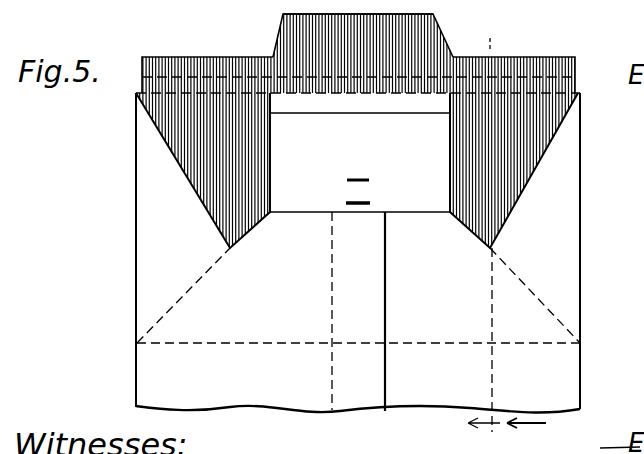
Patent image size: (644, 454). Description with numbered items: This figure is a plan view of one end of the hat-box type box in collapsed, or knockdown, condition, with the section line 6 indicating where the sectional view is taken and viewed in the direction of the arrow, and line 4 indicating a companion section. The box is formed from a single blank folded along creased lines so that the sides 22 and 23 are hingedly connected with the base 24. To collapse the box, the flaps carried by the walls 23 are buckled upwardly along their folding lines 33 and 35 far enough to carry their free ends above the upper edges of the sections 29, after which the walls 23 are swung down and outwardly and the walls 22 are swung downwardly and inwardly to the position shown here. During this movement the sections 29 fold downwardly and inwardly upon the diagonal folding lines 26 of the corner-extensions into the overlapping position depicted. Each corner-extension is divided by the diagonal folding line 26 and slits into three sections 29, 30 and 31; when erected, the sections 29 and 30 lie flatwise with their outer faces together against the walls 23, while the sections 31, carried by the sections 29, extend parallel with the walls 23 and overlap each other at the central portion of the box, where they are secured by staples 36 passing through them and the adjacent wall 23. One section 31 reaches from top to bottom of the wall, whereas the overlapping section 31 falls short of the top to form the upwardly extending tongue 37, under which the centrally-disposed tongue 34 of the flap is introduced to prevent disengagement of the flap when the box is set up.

The line 4 is at (532, 6).
The line 6 is at (507, 351).
The box side 22 is at (358, 372).
The box side 23 is at (485, 112).
The base 24 is at (440, 0).
The diagonal folding line 26 is at (200, 282).
The section 29 is at (341, 311).
The section 30 is at (158, 214).
The section 31 is at (316, 149).
The folding line 33 is at (190, 92).
The tongue 34 is at (305, 32).
The folding line 35 is at (181, 64).
The staple 36 is at (350, 203).
The tongue 37 is at (360, 171).